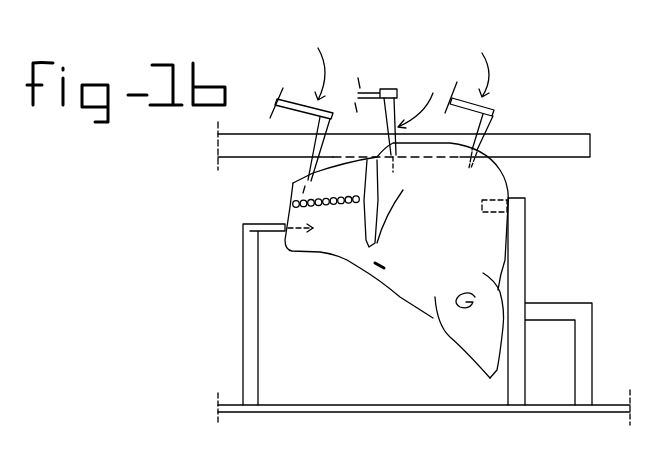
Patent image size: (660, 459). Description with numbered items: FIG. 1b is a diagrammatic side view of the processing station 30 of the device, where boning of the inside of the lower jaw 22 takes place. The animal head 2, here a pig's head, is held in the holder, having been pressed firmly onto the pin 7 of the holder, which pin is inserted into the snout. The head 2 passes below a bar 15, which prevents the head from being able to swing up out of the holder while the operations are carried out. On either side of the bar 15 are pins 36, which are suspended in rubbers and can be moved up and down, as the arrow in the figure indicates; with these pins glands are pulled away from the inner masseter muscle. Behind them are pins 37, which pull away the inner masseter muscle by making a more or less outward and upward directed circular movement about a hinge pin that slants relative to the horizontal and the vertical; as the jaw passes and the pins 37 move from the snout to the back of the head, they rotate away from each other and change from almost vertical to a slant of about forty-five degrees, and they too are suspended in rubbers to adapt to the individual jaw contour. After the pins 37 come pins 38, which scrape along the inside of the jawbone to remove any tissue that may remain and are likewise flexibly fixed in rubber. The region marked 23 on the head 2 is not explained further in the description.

The animal head 2 is at (347, 262).
The pin 7 is at (257, 250).
The bar 15 is at (573, 143).
The lower jaw 22 is at (293, 193).
The lower portion 23 is at (475, 362).
The station 30 is at (374, 55).
The pins 36 is at (297, 100).
The pins 37 is at (383, 93).
The pins 38 is at (493, 122).